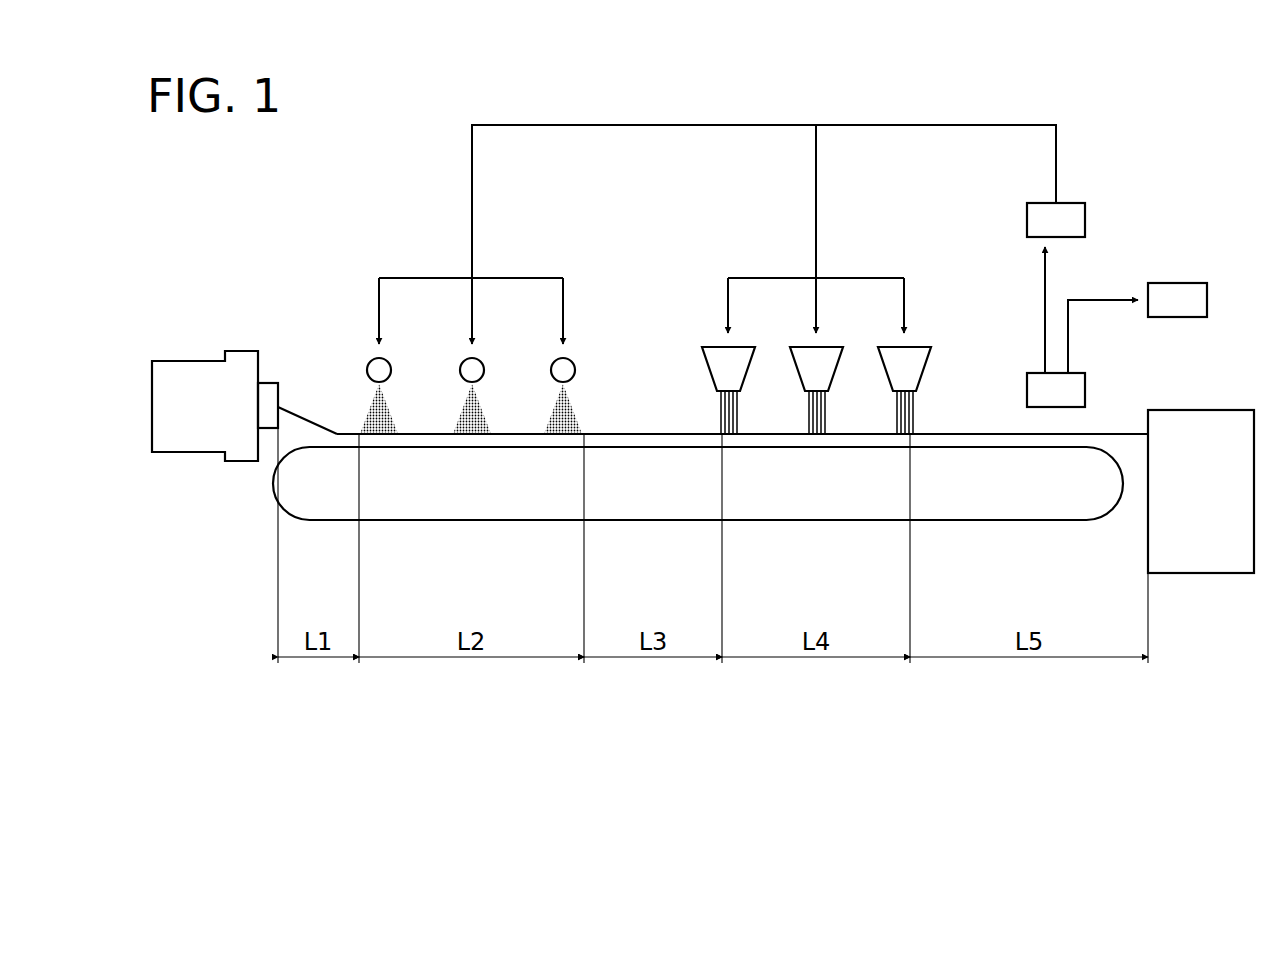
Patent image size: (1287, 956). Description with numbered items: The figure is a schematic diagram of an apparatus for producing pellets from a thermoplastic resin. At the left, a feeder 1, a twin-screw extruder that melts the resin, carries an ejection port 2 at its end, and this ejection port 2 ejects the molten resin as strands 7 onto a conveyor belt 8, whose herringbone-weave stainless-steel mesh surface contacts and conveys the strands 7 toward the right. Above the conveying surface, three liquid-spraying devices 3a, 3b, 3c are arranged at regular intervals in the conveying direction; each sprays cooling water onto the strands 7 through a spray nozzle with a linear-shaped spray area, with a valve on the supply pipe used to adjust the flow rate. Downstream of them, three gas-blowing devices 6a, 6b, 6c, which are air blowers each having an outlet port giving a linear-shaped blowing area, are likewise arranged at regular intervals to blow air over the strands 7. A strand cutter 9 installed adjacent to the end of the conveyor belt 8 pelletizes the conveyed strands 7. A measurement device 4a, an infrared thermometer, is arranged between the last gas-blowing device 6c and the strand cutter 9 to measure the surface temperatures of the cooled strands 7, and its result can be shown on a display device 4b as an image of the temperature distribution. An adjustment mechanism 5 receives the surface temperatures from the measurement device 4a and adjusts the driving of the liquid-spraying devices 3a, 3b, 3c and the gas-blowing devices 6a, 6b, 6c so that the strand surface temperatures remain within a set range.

The feeder 1 is at (185, 360).
The ejection port 2 is at (270, 383).
The liquid-spraying device 3a is at (389, 364).
The liquid-spraying device 3b is at (482, 364).
The liquid-spraying device 3c is at (573, 364).
The measurement device 4a is at (1075, 373).
The display device 4b is at (1192, 283).
The adjustment mechanism 5 is at (1071, 203).
The gas-blowing device 6a is at (744, 347).
The gas-blowing device 6b is at (832, 347).
The gas-blowing device 6c is at (920, 347).
The strand 7 is at (975, 434).
The conveyor belt 8 is at (273, 484).
The strand cutter 9 is at (1230, 410).